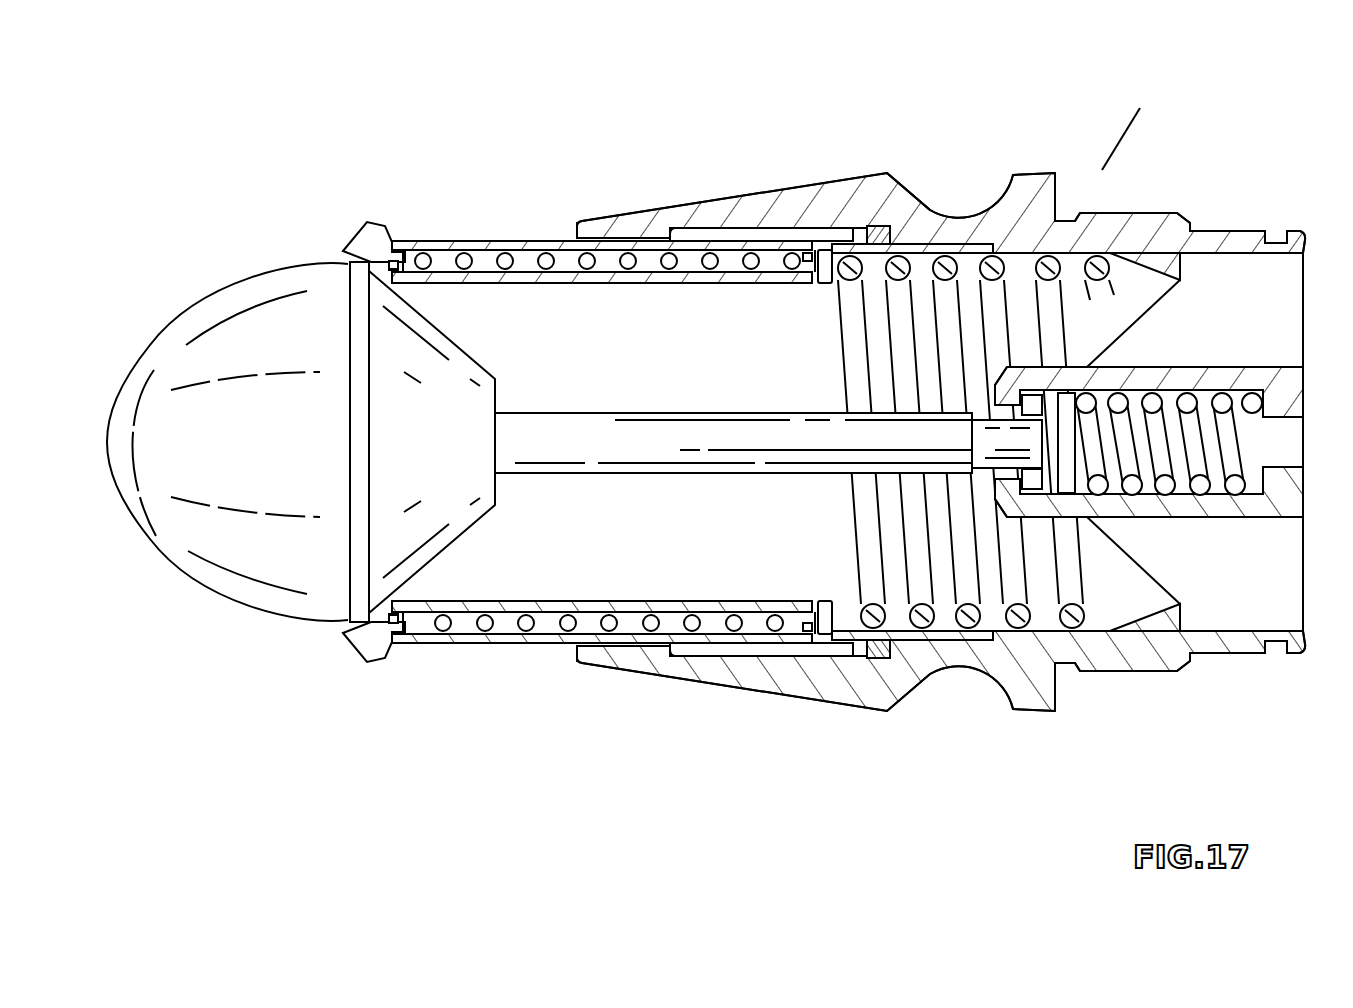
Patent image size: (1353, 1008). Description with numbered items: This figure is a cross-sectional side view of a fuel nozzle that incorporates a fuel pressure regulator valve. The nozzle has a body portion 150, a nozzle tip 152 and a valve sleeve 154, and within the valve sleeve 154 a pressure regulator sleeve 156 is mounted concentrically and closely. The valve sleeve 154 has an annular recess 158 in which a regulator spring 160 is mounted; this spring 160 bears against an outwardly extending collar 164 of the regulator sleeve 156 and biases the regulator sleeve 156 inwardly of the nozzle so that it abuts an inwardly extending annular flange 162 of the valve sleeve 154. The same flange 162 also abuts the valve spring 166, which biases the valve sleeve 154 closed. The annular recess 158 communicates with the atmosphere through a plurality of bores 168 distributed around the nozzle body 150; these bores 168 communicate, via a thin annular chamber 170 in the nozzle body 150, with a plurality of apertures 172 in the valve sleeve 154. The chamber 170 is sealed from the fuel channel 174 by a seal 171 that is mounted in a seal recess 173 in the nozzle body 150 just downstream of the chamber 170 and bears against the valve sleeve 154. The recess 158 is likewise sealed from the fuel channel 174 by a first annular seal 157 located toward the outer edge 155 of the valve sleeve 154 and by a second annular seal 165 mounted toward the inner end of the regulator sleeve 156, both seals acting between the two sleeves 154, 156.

The body portion 150 is at (1093, 185).
The nozzle tip 152 is at (152, 318).
The valve sleeve 154 is at (434, 636).
The outer edge 155 is at (342, 222).
The pressure regulator sleeve 156 is at (657, 616).
The first annular seal 157 is at (399, 258).
The annular recess 158 is at (603, 387).
The regulator spring 160 is at (575, 626).
The inwardly extending annular flange 162 is at (833, 285).
The outwardly extending collar 164 is at (808, 266).
The second annular seal 165 is at (805, 253).
The valve spring 166 is at (870, 517).
The bores 168 is at (817, 230).
The thin annular chamber 170 is at (730, 237).
The seal 171 is at (882, 172).
The apertures 172 is at (667, 240).
The seal recess 173 is at (887, 227).
The fuel channel 174 is at (577, 368).